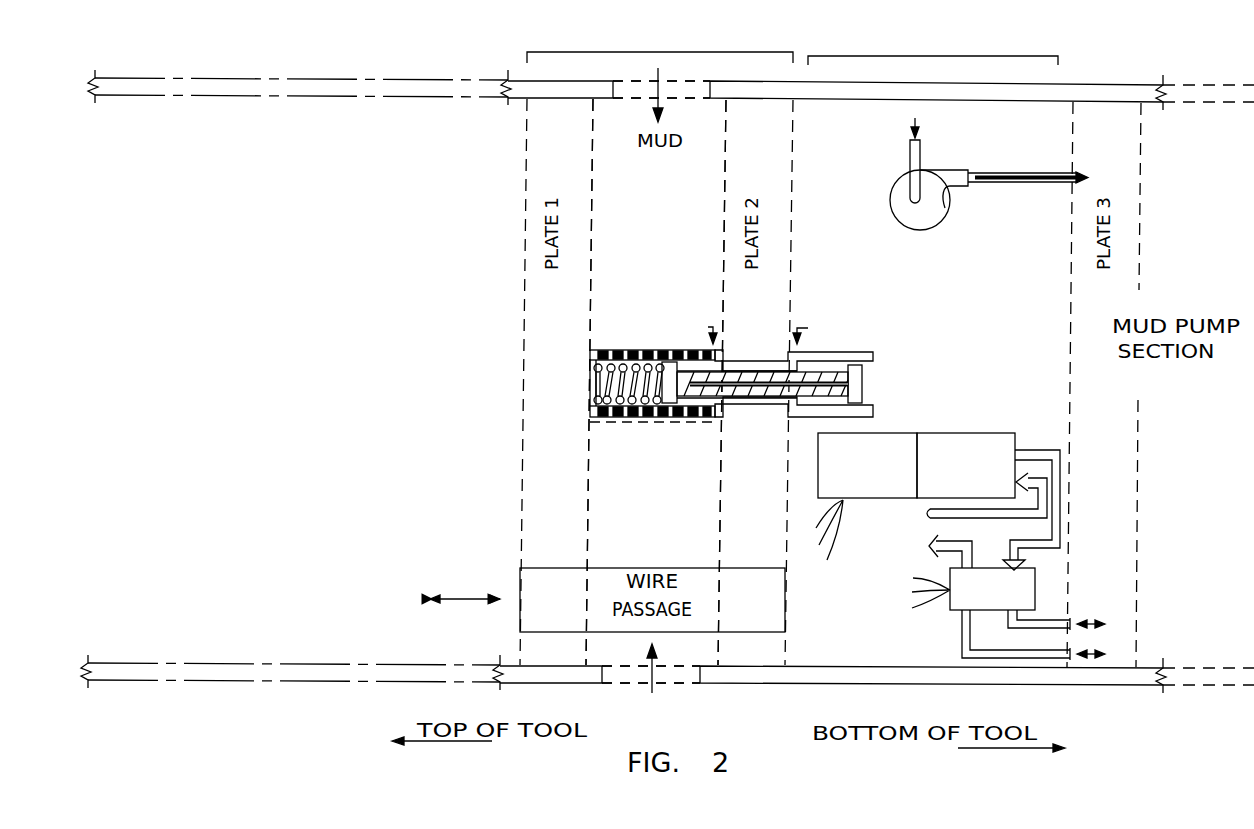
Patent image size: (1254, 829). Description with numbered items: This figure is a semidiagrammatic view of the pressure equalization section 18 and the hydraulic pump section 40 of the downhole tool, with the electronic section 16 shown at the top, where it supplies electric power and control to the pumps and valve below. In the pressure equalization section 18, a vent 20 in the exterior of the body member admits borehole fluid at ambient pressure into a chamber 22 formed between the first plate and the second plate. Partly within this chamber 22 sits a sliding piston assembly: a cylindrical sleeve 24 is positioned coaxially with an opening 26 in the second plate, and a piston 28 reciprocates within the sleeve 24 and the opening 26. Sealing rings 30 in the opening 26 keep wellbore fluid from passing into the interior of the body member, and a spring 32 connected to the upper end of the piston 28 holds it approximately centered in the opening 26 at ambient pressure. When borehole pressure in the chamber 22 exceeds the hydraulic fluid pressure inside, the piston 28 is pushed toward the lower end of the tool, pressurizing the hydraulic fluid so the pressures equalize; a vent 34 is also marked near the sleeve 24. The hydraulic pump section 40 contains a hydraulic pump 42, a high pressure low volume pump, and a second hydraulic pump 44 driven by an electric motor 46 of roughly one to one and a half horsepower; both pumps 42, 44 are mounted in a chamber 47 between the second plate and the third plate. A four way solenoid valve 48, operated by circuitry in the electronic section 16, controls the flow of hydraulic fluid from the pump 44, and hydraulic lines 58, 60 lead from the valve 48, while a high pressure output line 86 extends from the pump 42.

The electronic section 16 is at (284, 383).
The pressure equalization section 18 is at (644, 46).
The vent 20 is at (680, 82).
The chamber 22 is at (673, 222).
The cylindrical sleeve 24 is at (590, 410).
The opening 26 is at (733, 400).
The piston 28 is at (688, 398).
The sealing rings 30 is at (788, 405).
The spring 32 is at (590, 385).
The vent 34 is at (760, 322).
The hydraulic pump section 40 is at (935, 47).
The hydraulic pump 42 is at (932, 172).
The second hydraulic pump 44 is at (970, 433).
The electric motor 46 is at (895, 433).
The chamber 47 is at (995, 315).
The four way solenoid valve 48 is at (1037, 592).
The hydraulic line 58 is at (1060, 632).
The hydraulic line 60 is at (990, 658).
The high pressure output line 86 is at (1005, 173).